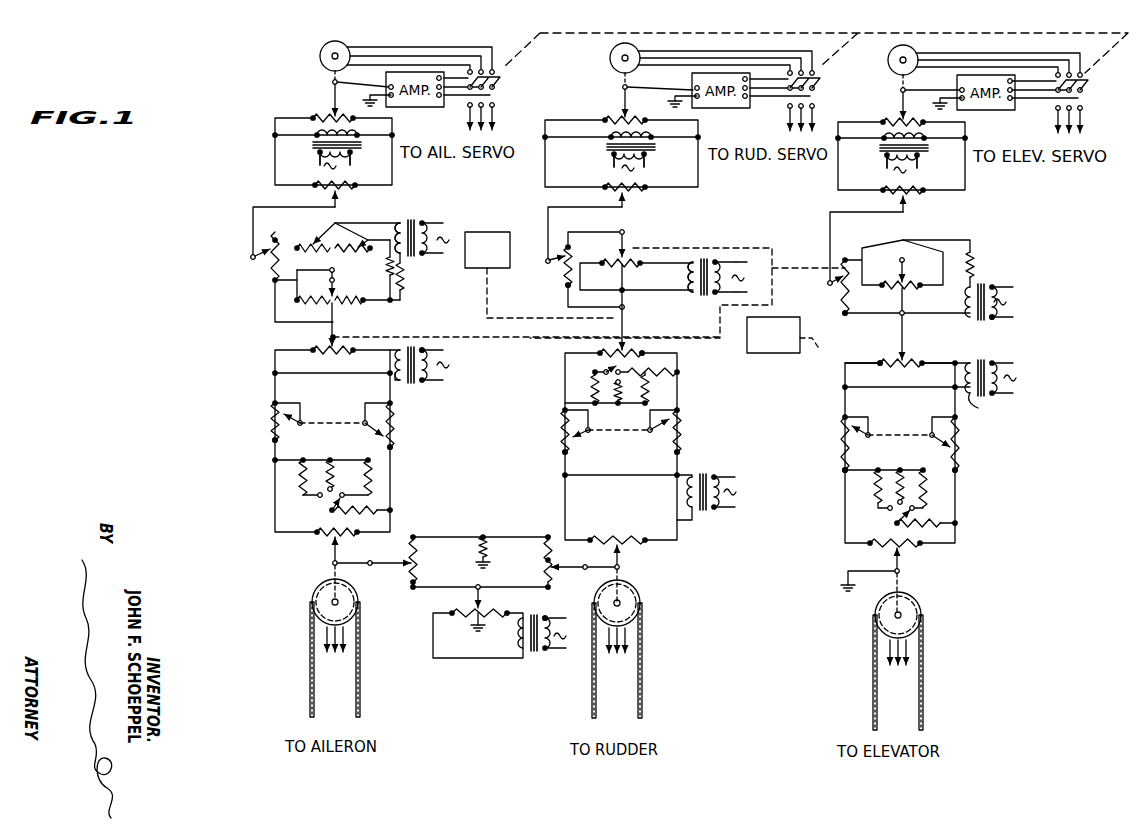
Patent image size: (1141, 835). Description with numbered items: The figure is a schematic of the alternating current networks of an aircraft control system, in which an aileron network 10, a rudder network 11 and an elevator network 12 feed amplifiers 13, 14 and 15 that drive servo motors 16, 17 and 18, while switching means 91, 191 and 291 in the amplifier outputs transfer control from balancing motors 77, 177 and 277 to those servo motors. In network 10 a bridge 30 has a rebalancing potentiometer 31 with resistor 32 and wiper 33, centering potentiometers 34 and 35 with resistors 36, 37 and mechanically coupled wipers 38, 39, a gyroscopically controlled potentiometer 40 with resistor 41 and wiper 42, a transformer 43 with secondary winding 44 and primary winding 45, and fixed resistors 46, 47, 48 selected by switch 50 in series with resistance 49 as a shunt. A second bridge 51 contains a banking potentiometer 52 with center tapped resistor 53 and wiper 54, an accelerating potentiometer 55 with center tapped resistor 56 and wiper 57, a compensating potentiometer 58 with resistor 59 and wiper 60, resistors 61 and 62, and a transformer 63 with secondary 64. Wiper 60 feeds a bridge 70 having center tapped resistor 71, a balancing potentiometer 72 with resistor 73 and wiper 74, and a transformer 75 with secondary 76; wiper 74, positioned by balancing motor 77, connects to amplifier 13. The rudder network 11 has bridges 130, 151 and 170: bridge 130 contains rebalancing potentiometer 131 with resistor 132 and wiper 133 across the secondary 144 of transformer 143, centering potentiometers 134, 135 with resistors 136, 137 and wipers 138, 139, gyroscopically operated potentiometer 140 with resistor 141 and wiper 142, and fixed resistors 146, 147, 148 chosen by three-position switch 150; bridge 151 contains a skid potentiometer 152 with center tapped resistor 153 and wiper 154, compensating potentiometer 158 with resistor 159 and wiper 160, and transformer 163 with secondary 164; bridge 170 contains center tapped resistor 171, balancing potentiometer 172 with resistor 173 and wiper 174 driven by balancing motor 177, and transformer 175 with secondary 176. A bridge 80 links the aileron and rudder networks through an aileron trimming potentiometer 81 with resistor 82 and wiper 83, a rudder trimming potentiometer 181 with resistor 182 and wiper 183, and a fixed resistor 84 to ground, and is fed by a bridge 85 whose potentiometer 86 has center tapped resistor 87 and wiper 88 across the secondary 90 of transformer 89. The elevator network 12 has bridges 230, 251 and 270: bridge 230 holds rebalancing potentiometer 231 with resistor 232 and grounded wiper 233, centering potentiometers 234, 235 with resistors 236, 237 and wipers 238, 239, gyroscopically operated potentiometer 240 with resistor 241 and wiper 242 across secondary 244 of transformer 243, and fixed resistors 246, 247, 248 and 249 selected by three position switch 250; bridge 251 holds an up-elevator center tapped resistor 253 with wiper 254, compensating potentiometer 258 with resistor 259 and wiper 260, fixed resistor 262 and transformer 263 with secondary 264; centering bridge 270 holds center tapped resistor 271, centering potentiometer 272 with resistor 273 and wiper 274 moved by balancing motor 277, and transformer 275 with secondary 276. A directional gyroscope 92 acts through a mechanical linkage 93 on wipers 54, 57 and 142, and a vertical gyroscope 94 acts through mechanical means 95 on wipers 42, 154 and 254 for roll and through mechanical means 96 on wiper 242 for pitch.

The aileron network 10 is at (246, 383).
The rudder network 11 is at (543, 402).
The elevator network 12 is at (798, 450).
The amplifier 13 is at (405, 107).
The amplifier 14 is at (712, 108).
The amplifier 15 is at (983, 111).
The servo motor 16 is at (313, 597).
The servo motor 17 is at (641, 605).
The servo motor 18 is at (874, 617).
The bridge 30 is at (341, 396).
The rebalancing potentiometer 31 is at (314, 541).
The resistor 32 is at (340, 541).
The wiper 33 is at (332, 562).
The centering potentiometer 34 is at (271, 430).
The centering potentiometer 35 is at (398, 433).
The resistor 36 is at (272, 415).
The resistor 37 is at (393, 425).
The wiper 38 is at (300, 420).
The wiper 39 is at (381, 432).
The gyroscopically controlled potentiometer 40 is at (312, 344).
The resistor 41 is at (350, 353).
The wiper 42 is at (338, 337).
The transformer 43 is at (424, 393).
The secondary winding 44 is at (420, 380).
The primary winding 45 is at (347, 148).
The fixed resistor 46 is at (303, 466).
The fixed resistor 47 is at (328, 461).
The fixed resistor 48 is at (366, 466).
The resistance 49 is at (360, 512).
The switch 50 is at (338, 500).
The second bridge 51 is at (355, 319).
The banking potentiometer 52 is at (372, 313).
The center tapped resistor 53 is at (322, 304).
The wiper 54 is at (347, 301).
The accelerating potentiometer 55 is at (342, 257).
The center tapped resistor 56 is at (318, 246).
The wiper 57 is at (331, 257).
The compensating potentiometer 58 is at (266, 265).
The resistor 59 is at (275, 281).
The wiper 60 is at (271, 243).
The resistor 61 is at (389, 266).
The resistor 62 is at (404, 272).
The transformer 63 is at (416, 218).
The secondary winding 64 is at (399, 228).
The bridge 70 is at (272, 157).
The center tapped resistor 71 is at (316, 187).
The balancing potentiometer 72 is at (318, 106).
The resistor 73 is at (311, 117).
The wiper 74 is at (333, 84).
The transformer 75 is at (312, 142).
The secondary winding 76 is at (352, 143).
The balancing motor 77 is at (325, 48).
The bridge 80 is at (464, 579).
The aileron trimming potentiometer 81 is at (407, 579).
The resistor 82 is at (417, 549).
The wiper 83 is at (408, 562).
The fixed resistor 84 is at (487, 549).
The bridge 85 is at (466, 651).
The potentiometer 86 is at (468, 609).
The center tapped resistor 87 is at (487, 625).
The wiper 88 is at (480, 607).
The transformer 89 is at (547, 615).
The secondary winding 90 is at (522, 641).
The switching means 91 is at (501, 84).
The directional gyroscope 92 is at (492, 230).
The mechanical linkage 93 is at (484, 312).
The vertical gyroscope 94 is at (770, 354).
The mechanical means 95 is at (775, 304).
The mechanical means 96 is at (816, 352).
The bridge 130 is at (636, 471).
The rebalancing potentiometer 131 is at (634, 548).
The resistor 132 is at (610, 538).
The wiper 133 is at (620, 569).
The centering potentiometer 134 is at (556, 443).
The centering potentiometer 135 is at (686, 440).
The resistor 136 is at (564, 431).
The resistor 137 is at (680, 424).
The wiper 138 is at (577, 437).
The wiper 139 is at (668, 430).
The gyroscopically operated potentiometer 140 is at (596, 352).
The resistor 141 is at (645, 353).
The wiper 142 is at (627, 345).
The transformer 143 is at (714, 510).
The secondary winding 144 is at (685, 521).
The fixed resistor 146 is at (594, 391).
The fixed resistor 147 is at (620, 402).
The fixed resistor 148 is at (646, 378).
The three-position switch 150 is at (604, 371).
The bridge 151 is at (654, 303).
The skid potentiometer 152 is at (629, 255).
The center tapped resistor 153 is at (636, 266).
The wiper 154 is at (616, 254).
The compensating potentiometer 158 is at (558, 262).
The resistor 159 is at (567, 288).
The wiper 160 is at (563, 247).
The transformer 163 is at (704, 299).
The secondary winding 164 is at (693, 263).
The bridge 170 is at (703, 173).
The center tapped resistor 171 is at (636, 192).
The balancing potentiometer 172 is at (614, 106).
The resistor 173 is at (604, 118).
The wiper 174 is at (627, 90).
The transformer 175 is at (600, 147).
The secondary winding 176 is at (655, 143).
The balancing motor 177 is at (611, 59).
The rudder trimming potentiometer 181 is at (559, 561).
The resistor 182 is at (546, 571).
The wiper 183 is at (582, 569).
The switching means 191 is at (809, 90).
The bridge 230 is at (916, 417).
The rebalancing potentiometer 231 is at (915, 553).
The resistor 232 is at (900, 573).
The wiper 233 is at (893, 556).
The centering potentiometer 234 is at (833, 460).
The centering potentiometer 235 is at (964, 457).
The resistor 236 is at (850, 430).
The resistor 237 is at (958, 426).
The wiper 238 is at (854, 434).
The wiper 239 is at (946, 449).
The gyroscopically operated potentiometer 240 is at (921, 359).
The resistor 241 is at (880, 361).
The wiper 242 is at (905, 346).
The transformer 243 is at (991, 361).
The secondary winding 244 is at (977, 407).
The fixed resistor 246 is at (876, 486).
The fixed resistor 247 is at (898, 474).
The fixed resistor 248 is at (926, 486).
The fixed resistor 249 is at (913, 526).
The three position switch 250 is at (903, 516).
The bridge 251 is at (883, 335).
The center tapped resistor 253 is at (894, 290).
The wiper 254 is at (904, 261).
The compensating potentiometer 258 is at (841, 293).
The resistor 259 is at (844, 313).
The wiper 260 is at (840, 283).
The fixed resistor 262 is at (975, 263).
The transformer 263 is at (984, 283).
The secondary winding 264 is at (975, 314).
The centering bridge 270 is at (969, 183).
The center tapped resistor 271 is at (908, 195).
The centering potentiometer 272 is at (891, 115).
The resistor 273 is at (881, 124).
The wiper 274 is at (901, 91).
The transformer 275 is at (880, 145).
The secondary winding 276 is at (921, 143).
The balancing motor 277 is at (889, 61).
The switching means 291 is at (1085, 91).